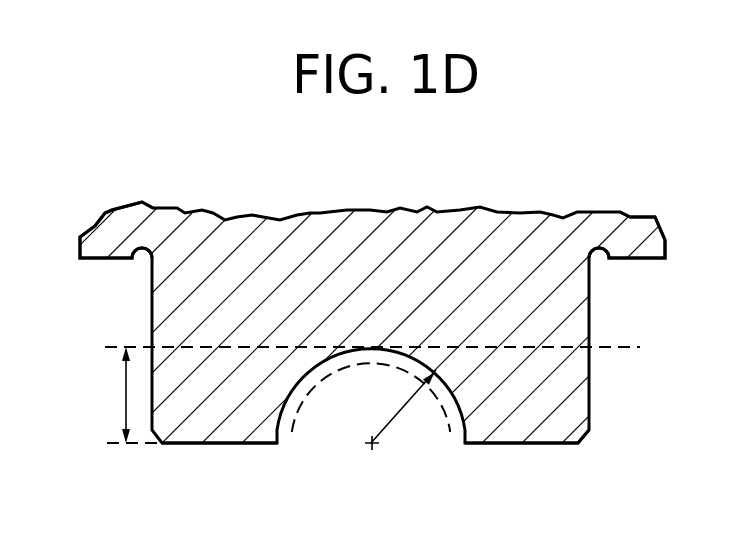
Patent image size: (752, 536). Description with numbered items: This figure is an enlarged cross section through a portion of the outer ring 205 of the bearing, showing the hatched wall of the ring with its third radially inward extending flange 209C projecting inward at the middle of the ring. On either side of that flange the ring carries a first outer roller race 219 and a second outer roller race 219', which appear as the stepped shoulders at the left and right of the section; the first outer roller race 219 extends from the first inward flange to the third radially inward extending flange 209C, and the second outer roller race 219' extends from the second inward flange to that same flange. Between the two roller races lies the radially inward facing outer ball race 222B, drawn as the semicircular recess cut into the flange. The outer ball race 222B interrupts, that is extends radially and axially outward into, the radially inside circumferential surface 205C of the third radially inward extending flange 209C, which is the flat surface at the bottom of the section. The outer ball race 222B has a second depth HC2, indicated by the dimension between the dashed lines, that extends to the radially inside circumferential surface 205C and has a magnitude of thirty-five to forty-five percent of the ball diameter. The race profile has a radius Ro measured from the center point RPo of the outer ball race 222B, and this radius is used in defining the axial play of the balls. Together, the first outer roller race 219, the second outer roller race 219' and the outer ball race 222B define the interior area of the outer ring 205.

The outer ring 205 is at (507, 227).
The first outer roller race 219 is at (111, 257).
The second outer roller race 219' is at (635, 260).
The third radially inward extending flange 209C is at (554, 365).
The radially inside circumferential surface 205C is at (530, 444).
The outer ball race 222B is at (370, 363).
The second depth HC2 is at (125, 393).
The radius of the outer ball race Ro is at (393, 420).
The center point of the outer ball race RPo is at (373, 447).